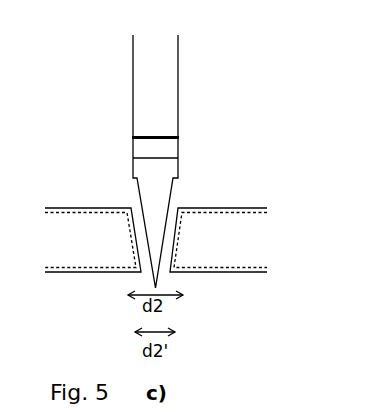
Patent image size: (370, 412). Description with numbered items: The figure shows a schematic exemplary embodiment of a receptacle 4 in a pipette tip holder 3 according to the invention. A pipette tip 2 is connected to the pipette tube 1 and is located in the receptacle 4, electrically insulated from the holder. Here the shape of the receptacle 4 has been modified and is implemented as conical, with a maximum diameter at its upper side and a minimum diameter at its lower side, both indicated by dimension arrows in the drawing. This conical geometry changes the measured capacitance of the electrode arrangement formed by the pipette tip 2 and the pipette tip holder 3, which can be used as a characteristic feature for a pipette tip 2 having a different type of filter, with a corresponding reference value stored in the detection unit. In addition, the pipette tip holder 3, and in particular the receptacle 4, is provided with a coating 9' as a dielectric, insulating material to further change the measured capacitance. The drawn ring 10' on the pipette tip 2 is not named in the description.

The pipette tube 1 is at (153, 113).
The ring / seal 10' is at (120, 130).
The pipette tip 2 is at (182, 167).
The coating 9' is at (93, 205).
The pipette tip holder 3 is at (260, 242).
The receptacle 4 is at (163, 278).